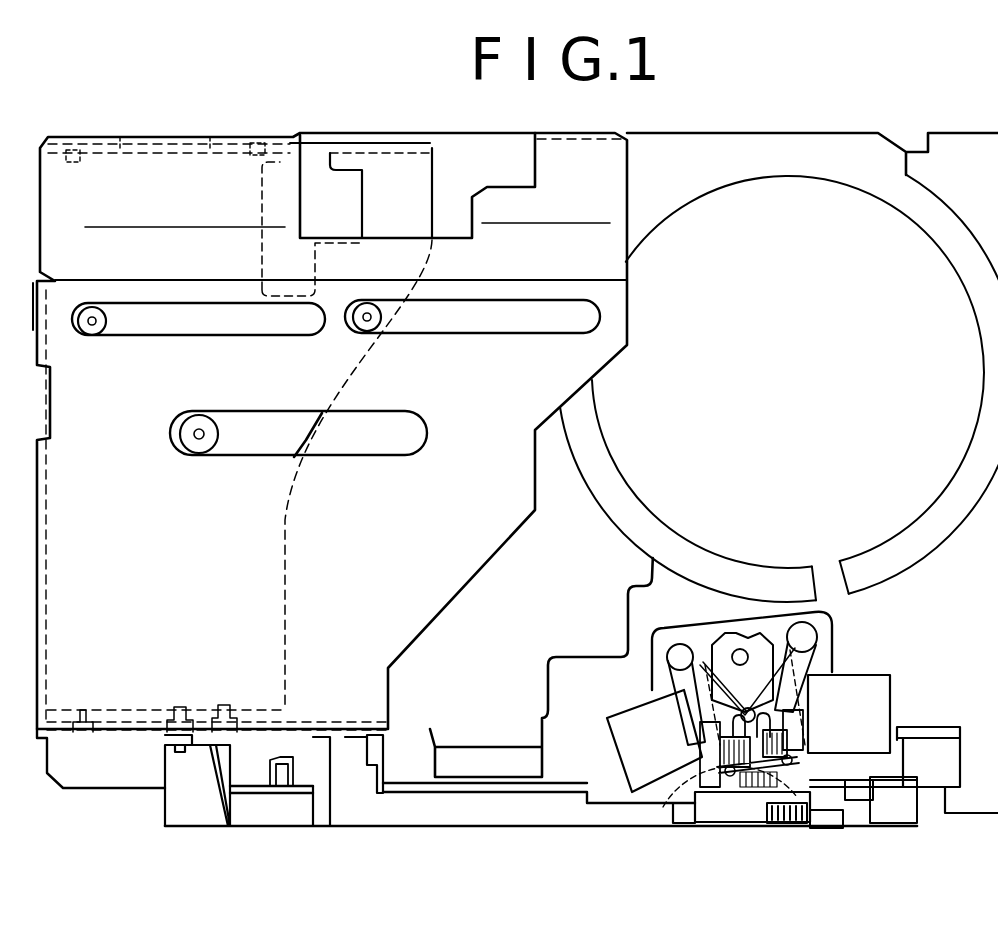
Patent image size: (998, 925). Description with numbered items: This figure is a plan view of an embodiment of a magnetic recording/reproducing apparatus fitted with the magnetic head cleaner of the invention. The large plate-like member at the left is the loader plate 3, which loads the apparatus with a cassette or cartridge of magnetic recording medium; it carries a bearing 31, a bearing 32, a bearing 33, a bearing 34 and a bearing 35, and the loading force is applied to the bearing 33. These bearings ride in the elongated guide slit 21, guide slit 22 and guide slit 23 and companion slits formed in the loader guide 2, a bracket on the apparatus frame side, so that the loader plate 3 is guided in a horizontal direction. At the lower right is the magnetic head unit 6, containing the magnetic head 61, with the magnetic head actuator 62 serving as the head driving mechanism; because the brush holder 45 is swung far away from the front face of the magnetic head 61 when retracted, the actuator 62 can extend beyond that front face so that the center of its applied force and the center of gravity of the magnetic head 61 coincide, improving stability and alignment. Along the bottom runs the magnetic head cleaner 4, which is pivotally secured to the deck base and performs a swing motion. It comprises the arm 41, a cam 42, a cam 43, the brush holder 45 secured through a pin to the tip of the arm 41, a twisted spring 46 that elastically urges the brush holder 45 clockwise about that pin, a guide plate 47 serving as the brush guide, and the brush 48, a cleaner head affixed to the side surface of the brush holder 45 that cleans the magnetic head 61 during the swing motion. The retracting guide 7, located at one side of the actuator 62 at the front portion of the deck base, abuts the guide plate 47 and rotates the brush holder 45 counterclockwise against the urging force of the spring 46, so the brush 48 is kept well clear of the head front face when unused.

The loader guide 2 is at (627, 188).
The loader plate 3 is at (432, 190).
The magnetic head cleaner 4 is at (540, 832).
The magnetic head unit 6 is at (840, 652).
The retracting guide 7 is at (900, 823).
The guide slit 21 is at (183, 336).
The guide slit 22 is at (522, 322).
The guide slit 23 is at (395, 452).
The bearing 31 is at (93, 333).
The bearing 32 is at (361, 332).
The bearing 33 is at (199, 452).
The bearing 34 is at (80, 708).
The bearing 35 is at (177, 707).
The arm 41 is at (460, 808).
The cam 42 is at (200, 745).
The cam 43 is at (350, 750).
The brush holder 45 is at (717, 810).
The twisted spring 46 is at (787, 823).
The guide plate 47 is at (853, 800).
The brush 48 is at (750, 790).
The magnetic head 61 is at (662, 702).
The magnetic head actuator 62 is at (668, 785).